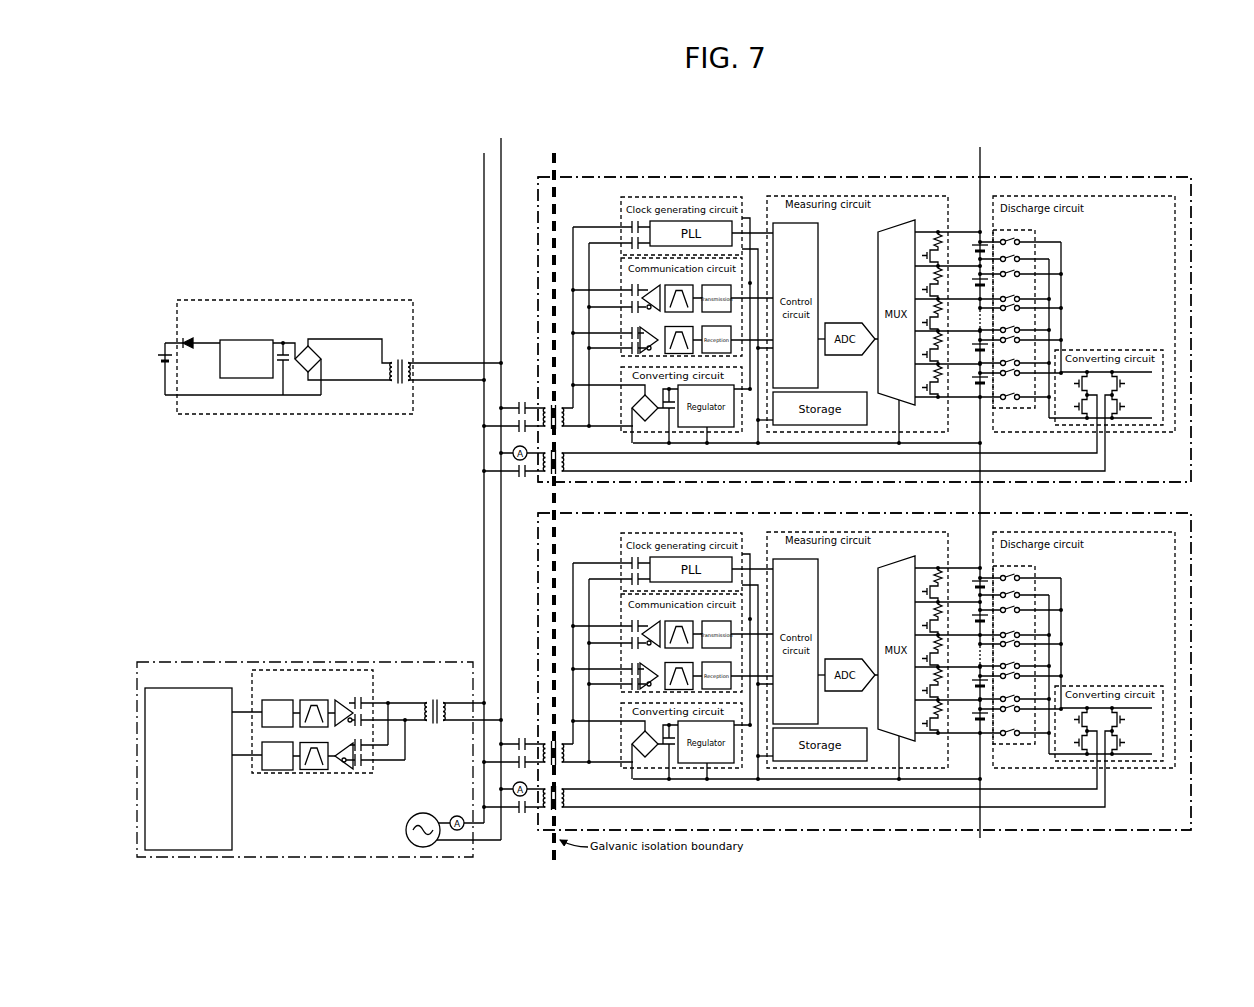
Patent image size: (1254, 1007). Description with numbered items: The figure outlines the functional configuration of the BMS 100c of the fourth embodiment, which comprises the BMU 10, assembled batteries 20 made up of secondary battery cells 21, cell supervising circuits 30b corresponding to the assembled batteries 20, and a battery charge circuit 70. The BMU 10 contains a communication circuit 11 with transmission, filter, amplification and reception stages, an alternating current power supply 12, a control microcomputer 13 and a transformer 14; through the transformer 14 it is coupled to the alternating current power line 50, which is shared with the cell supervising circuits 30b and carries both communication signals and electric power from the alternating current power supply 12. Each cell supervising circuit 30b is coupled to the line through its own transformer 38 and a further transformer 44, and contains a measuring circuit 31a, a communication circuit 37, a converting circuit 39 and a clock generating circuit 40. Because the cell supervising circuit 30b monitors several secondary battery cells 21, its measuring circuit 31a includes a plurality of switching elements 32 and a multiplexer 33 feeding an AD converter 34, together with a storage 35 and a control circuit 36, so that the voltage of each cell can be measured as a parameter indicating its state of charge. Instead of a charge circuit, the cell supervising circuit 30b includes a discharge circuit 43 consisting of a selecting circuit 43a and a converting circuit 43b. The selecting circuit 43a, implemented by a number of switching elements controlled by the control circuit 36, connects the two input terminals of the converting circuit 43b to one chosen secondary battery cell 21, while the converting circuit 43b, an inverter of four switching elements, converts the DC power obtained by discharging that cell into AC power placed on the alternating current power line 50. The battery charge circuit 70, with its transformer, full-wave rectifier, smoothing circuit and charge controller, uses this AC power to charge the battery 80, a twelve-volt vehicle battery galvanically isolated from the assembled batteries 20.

The BMS 100c is at (1148, 161).
The cell supervising circuit 30b is at (566, 178).
The clock generating circuit 40 is at (620, 212).
The communication circuit 37 is at (621, 282).
The converting circuit 39 is at (621, 380).
The transformer 38 is at (565, 428).
The transformer 44 is at (565, 480).
The measuring circuit 31a is at (809, 196).
The control circuit 36 is at (818, 227).
The multiplexer 33 is at (878, 264).
The AD converter 34 is at (858, 322).
The storage 35 is at (828, 392).
The switching element 32 is at (930, 242).
The assembled battery 20 is at (978, 239).
The secondary battery cell 21 is at (978, 392).
The discharge circuit 43 is at (1020, 197).
The selecting circuit 43a is at (1030, 231).
The converting circuit 43b is at (1112, 350).
The battery charge circuit 70 is at (367, 298).
The battery 80 is at (152, 353).
The BMU 10 is at (426, 662).
The control microcomputer 13 is at (190, 687).
The communication circuit 11 is at (282, 668).
The transformer 14 is at (435, 728).
The alternating current power supply 12 is at (425, 812).
The alternating current power line 50 is at (498, 512).